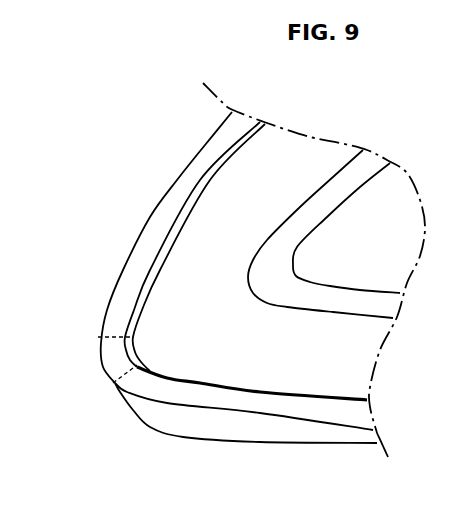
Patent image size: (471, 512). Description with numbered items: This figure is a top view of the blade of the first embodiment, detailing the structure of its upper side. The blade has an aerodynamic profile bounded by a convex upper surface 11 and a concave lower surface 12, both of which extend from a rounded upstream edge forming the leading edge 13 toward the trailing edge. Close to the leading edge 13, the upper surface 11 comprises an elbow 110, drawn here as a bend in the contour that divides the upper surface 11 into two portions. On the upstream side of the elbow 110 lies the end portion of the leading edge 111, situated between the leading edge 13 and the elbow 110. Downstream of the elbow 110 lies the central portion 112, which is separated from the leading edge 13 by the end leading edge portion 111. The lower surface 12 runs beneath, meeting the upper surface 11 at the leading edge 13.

The upper surface 11 is at (191, 172).
The elbow 110 is at (100, 338).
The end portion of the leading edge 111 is at (108, 357).
The central portion 112 is at (165, 215).
The lower surface 12 is at (240, 430).
The leading edge 13 is at (115, 383).